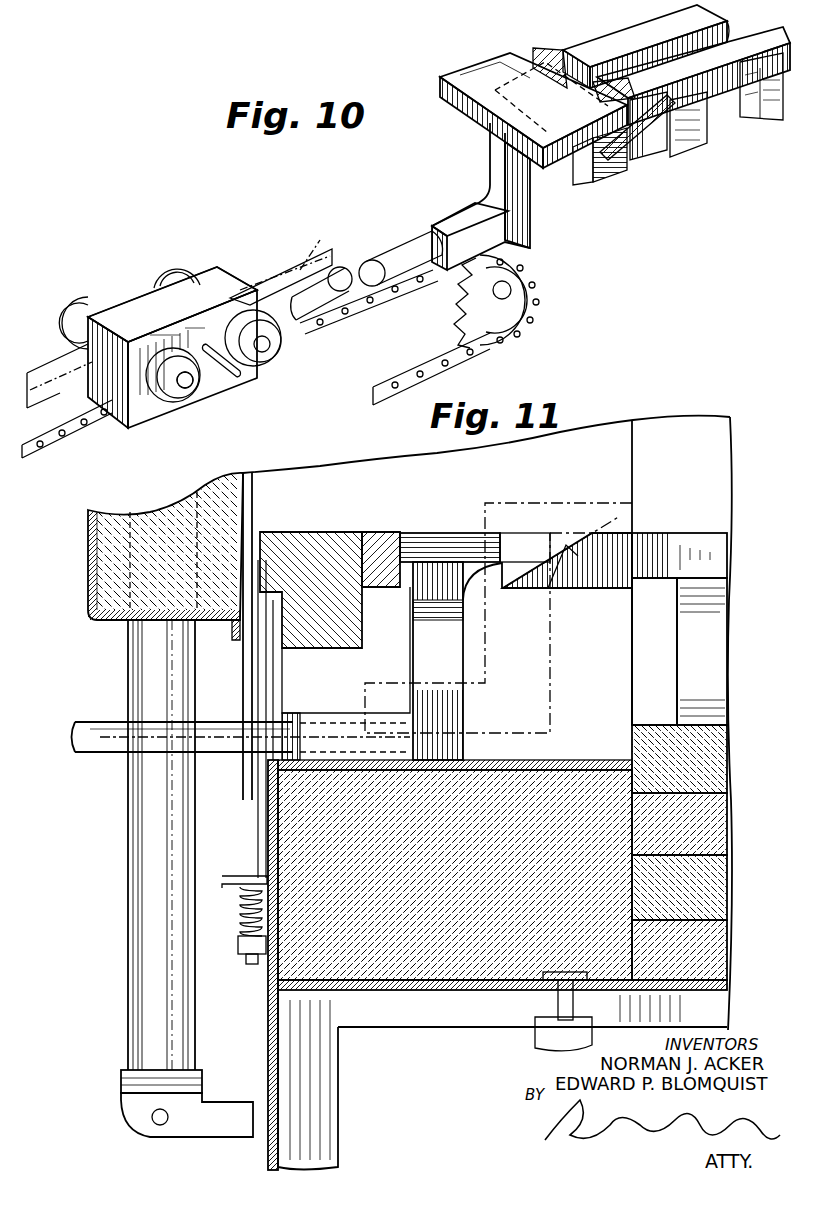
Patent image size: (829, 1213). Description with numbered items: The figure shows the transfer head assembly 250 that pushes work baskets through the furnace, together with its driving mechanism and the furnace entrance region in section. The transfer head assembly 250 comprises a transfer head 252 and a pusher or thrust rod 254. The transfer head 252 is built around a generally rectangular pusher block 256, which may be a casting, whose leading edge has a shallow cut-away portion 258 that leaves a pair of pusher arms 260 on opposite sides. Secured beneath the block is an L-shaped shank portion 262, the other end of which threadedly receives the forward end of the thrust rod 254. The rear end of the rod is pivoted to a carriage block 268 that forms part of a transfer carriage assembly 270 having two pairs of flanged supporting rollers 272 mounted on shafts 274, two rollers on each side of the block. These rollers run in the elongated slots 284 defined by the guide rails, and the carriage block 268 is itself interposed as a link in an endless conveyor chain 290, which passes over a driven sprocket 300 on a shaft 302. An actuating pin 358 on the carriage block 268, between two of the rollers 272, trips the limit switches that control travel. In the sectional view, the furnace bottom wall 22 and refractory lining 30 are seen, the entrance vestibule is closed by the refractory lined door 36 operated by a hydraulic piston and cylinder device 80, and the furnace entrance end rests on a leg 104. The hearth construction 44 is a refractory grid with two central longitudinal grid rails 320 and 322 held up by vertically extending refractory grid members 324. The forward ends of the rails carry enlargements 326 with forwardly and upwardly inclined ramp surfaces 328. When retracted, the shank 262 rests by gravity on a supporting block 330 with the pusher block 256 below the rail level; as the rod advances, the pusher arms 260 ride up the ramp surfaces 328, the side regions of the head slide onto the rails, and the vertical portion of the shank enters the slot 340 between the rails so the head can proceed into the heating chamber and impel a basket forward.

In FIG. 11, the bottom wall 22 is at (463, 990).
In FIG. 11, the refractory lining 30 is at (730, 822).
In FIG. 11, the entrance vestibule door 36 is at (97, 582).
In FIG. 10, the hearth construction 44 is at (770, 78).
In FIG. 11, the piston and cylinder device 80 is at (125, 926).
In FIG. 11, the leg 104 is at (318, 1130).
In FIG. 10, the transfer head assembly 250 is at (486, 166).
In FIG. 11, the transfer head assembly 250 is at (408, 644).
In FIG. 10, the transfer head 252 is at (442, 100).
In FIG. 11, the transfer head 252 is at (420, 528).
In FIG. 10, the pusher or thrust rod 254 is at (397, 258).
In FIG. 11, the pusher or thrust rod 254 is at (100, 722).
In FIG. 10, the pusher block 256 is at (492, 66).
In FIG. 11, the pusher block 256 is at (447, 532).
In FIG. 10, the cut-away portion 258 is at (594, 90).
In FIG. 10, the pusher arms 260 is at (538, 60).
In FIG. 10, the L-shaped shank portion 262 is at (528, 204).
In FIG. 11, the L-shaped shank portion 262 is at (545, 735).
In FIG. 10, the carriage block 268 is at (172, 304).
In FIG. 10, the transfer carriage assembly 270 is at (245, 268).
In FIG. 10, the supporting rollers 272 is at (160, 266).
In FIG. 10, the shafts 274 is at (183, 388).
In FIG. 10, the elongated slots 284 is at (302, 268).
In FIG. 10, the endless conveyor chain 290 is at (372, 292).
In FIG. 10, the driven sprocket 300 is at (524, 287).
In FIG. 10, the shaft 302 is at (506, 299).
In FIG. 10, the grid rail 320 is at (682, 24).
In FIG. 11, the grid rail 320 is at (658, 545).
In FIG. 10, the grid rail 322 is at (755, 46).
In FIG. 10, the vertically extending refractory grid members 324 is at (600, 175).
In FIG. 10, the enlargements 326 is at (668, 125).
In FIG. 11, the enlargements 326 is at (618, 568).
In FIG. 11, the ramp surface 328 is at (566, 548).
In FIG. 11, the supporting block 330 is at (392, 962).
In FIG. 10, the slot 340 is at (727, 26).
In FIG. 10, the actuating pin 358 is at (222, 382).